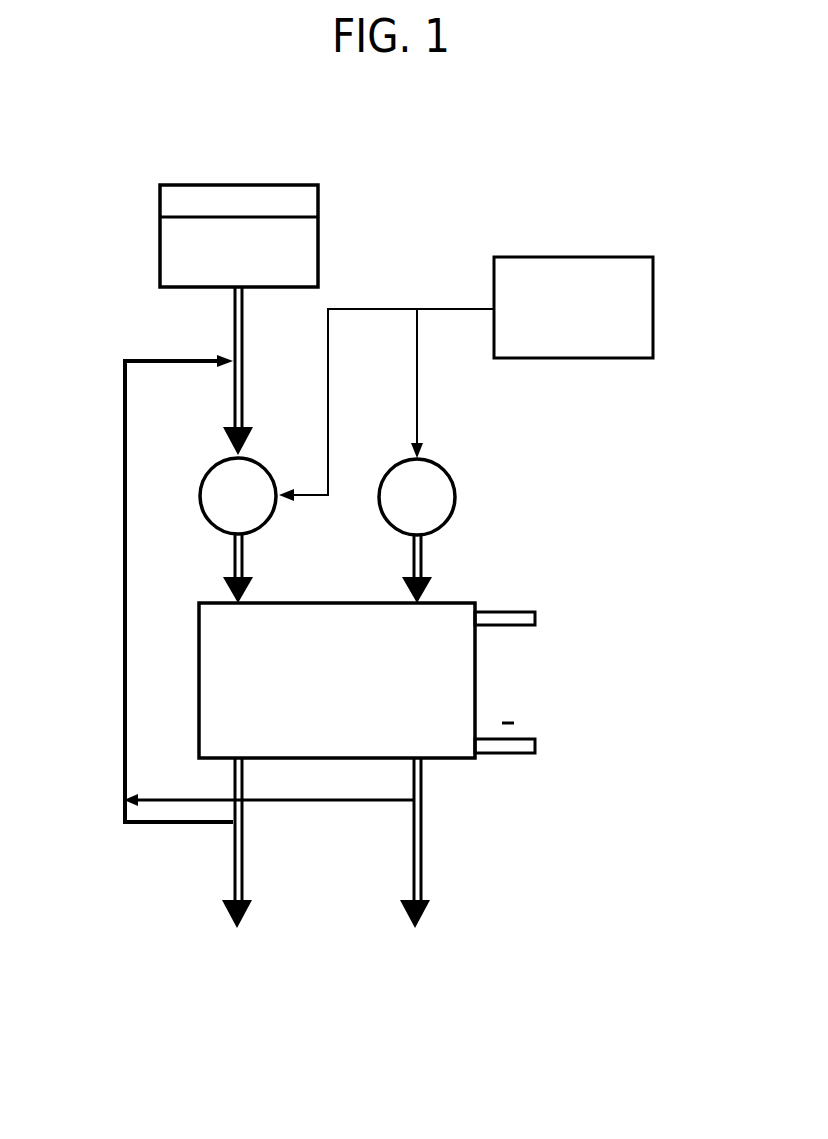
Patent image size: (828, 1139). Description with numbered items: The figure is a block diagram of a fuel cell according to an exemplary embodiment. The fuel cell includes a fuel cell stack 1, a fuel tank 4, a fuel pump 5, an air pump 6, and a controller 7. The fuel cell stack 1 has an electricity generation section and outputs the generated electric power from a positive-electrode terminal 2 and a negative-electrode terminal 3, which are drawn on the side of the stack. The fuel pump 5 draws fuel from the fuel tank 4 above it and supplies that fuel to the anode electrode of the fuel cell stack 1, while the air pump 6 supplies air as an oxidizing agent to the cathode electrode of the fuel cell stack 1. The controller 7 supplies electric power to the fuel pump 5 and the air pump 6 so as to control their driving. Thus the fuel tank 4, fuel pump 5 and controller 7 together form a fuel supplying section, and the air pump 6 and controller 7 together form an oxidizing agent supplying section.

The fuel cell stack 1 is at (203, 682).
The positive-electrode terminal 2 is at (533, 616).
The negative-electrode terminal 3 is at (532, 747).
The fuel tank 4 is at (305, 195).
The fuel pump 5 is at (201, 506).
The air pump 6 is at (458, 492).
The controller 7 is at (642, 267).